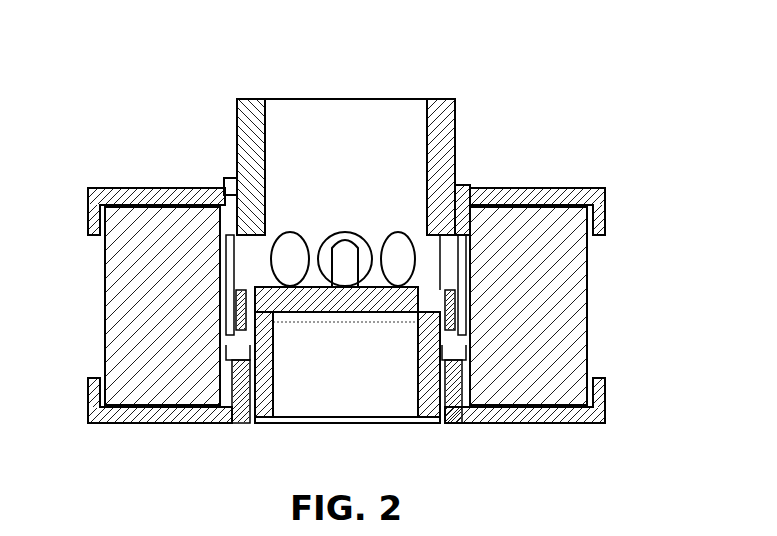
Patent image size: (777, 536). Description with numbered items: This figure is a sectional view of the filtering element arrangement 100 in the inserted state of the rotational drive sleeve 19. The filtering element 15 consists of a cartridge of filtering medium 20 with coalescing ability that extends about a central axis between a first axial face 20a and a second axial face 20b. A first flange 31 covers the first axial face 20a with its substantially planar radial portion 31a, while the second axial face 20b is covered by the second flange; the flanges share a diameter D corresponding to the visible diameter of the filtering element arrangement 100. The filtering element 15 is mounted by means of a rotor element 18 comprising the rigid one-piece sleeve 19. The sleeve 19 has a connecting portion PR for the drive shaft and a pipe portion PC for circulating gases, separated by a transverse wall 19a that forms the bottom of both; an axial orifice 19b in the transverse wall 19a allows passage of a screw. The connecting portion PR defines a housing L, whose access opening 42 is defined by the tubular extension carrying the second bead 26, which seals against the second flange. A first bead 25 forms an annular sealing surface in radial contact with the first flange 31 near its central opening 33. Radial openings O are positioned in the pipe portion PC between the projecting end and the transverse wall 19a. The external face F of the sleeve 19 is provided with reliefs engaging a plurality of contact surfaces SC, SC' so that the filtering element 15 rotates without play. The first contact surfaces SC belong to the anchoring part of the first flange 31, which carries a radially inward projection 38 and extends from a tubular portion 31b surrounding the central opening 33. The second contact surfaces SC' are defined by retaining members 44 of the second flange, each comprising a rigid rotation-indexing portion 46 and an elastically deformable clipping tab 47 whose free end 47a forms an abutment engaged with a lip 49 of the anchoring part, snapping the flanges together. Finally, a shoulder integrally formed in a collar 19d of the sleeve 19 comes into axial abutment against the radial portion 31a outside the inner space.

The filtering element 15 is at (130, 430).
The rotor element 18 is at (214, 108).
The sleeve 19 is at (452, 98).
The transverse wall 19a is at (380, 240).
The axial orifice 19b is at (300, 380).
The collar 19d is at (228, 186).
The filtering medium 20 is at (100, 372).
The first axial face 20a is at (165, 205).
The second axial face 20b is at (548, 424).
The first bead 25 is at (470, 230).
The second bead 26 is at (450, 424).
The first flange 31 is at (118, 190).
The radial portion 31a is at (540, 190).
The tubular portion 31b is at (232, 262).
The central opening 33 is at (250, 150).
The projection 38 is at (238, 325).
The access opening 42 is at (345, 422).
The retaining member 44 is at (238, 297).
The rigid rotation-indexing portion 46 is at (452, 358).
The elastically deformable clipping tab 47 is at (460, 308).
The free end 47a is at (462, 275).
The lip 49 is at (455, 332).
The filtering element arrangement 100 is at (607, 430).
The diameter D is at (605, 185).
The radial openings O is at (287, 236).
The first contact surfaces SC is at (341, 168).
The second contact surfaces SC' is at (423, 416).
The pipe portion PC is at (237, 134).
The connecting portion PR is at (415, 375).
The housing L is at (330, 380).
The external face F is at (232, 352).